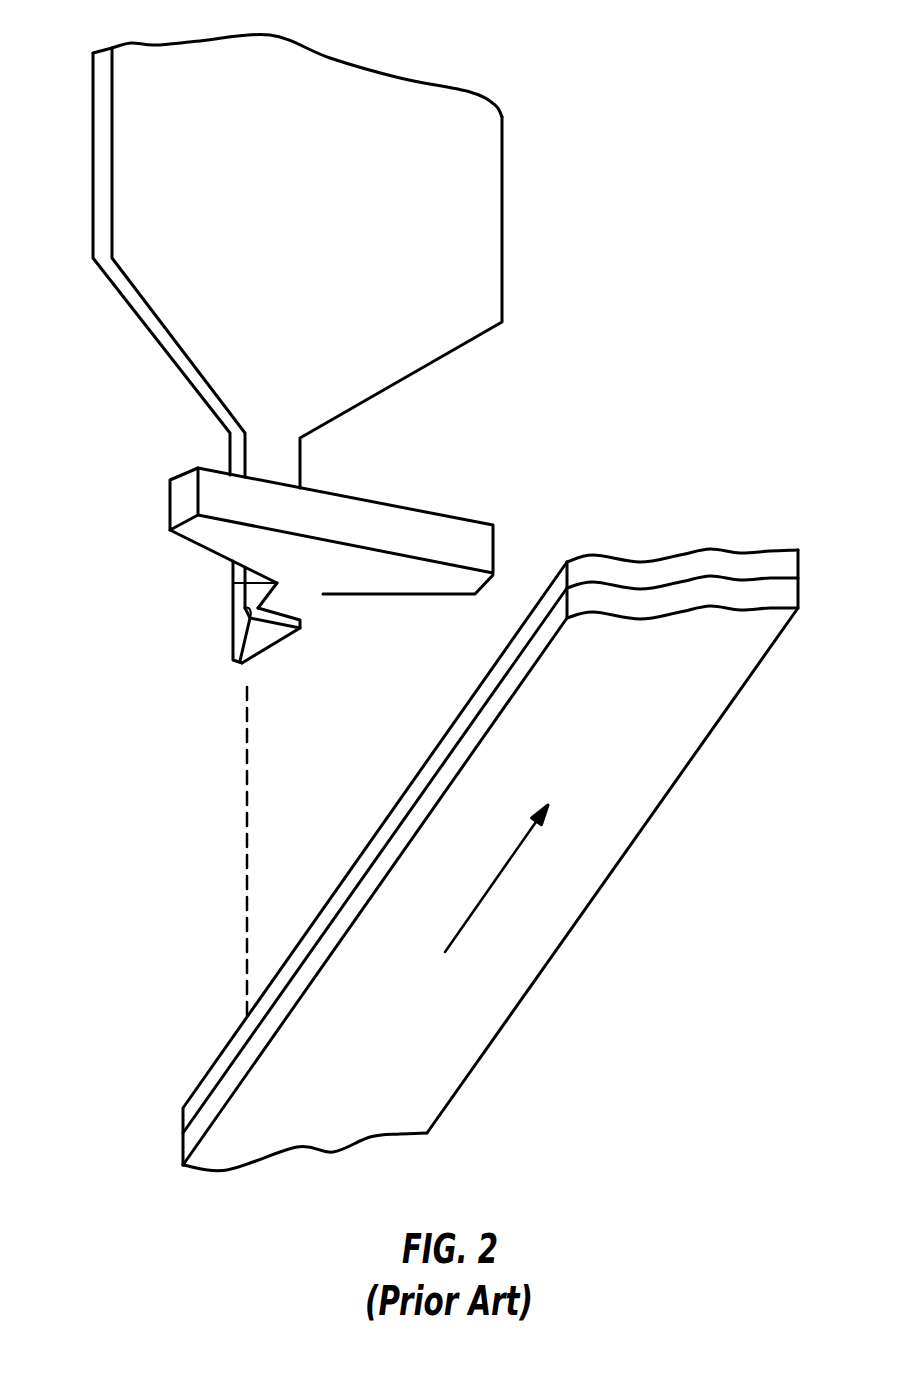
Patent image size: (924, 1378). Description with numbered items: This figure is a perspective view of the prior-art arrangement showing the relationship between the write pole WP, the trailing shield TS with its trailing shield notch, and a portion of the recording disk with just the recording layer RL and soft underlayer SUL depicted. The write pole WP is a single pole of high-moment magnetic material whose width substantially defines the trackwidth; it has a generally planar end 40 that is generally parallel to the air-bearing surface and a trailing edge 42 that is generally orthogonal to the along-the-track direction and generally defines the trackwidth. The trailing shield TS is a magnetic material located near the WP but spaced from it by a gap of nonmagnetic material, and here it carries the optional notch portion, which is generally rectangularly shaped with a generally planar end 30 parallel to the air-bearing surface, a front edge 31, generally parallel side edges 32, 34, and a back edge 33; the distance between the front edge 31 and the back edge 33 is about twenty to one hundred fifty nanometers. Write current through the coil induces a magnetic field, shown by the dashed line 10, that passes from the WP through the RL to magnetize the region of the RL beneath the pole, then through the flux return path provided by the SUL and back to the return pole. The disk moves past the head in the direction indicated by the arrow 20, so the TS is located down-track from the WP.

The magnetic field 10 is at (247, 829).
The arrow indicating disk movement direction 20 is at (427, 862).
The planar end 30 is at (300, 621).
The front edge 31 is at (280, 610).
The side edge 32 is at (233, 583).
The back edge 33 is at (188, 541).
The side edge 34 is at (305, 598).
The planar end 40 is at (257, 657).
The trailing edge 42 is at (245, 611).
The write pole WP is at (347, 303).
The trailing shield TS is at (320, 513).
The recording layer RL is at (240, 1045).
The soft underlayer SUL is at (222, 1100).